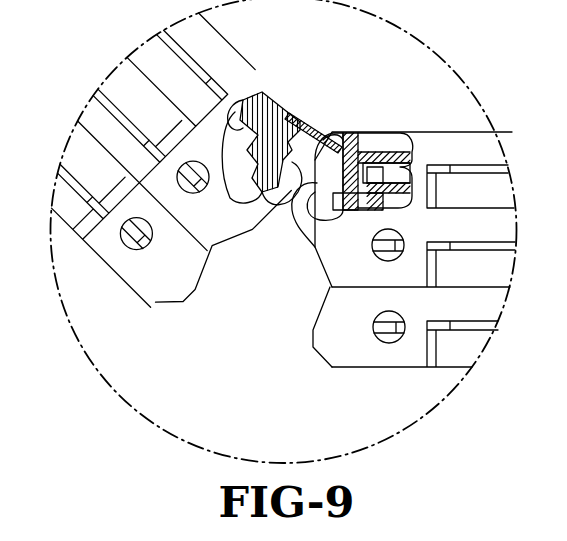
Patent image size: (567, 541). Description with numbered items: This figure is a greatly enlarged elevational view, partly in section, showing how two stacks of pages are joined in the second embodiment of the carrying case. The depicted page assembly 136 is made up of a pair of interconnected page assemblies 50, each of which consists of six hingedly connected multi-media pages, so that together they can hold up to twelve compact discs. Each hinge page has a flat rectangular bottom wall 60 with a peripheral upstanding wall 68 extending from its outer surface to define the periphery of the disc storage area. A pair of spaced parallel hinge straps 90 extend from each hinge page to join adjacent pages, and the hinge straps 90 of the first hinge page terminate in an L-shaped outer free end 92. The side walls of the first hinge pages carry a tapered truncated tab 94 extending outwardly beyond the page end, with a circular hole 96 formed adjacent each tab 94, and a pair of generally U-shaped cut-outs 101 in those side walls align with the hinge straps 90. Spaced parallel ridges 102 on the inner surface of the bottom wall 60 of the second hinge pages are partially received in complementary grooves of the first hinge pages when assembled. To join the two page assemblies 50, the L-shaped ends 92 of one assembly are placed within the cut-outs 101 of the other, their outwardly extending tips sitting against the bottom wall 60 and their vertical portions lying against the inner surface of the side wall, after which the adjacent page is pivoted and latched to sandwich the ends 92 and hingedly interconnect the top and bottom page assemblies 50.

The page assembly 50 is at (124, 318).
The bottom wall 60 is at (266, 100).
The peripheral upstanding wall 68 is at (345, 133).
The hinge straps 90 is at (320, 204).
The L-shaped outer free end 92 is at (302, 128).
The tapered truncated tab 94 is at (336, 135).
The circular hole 96 is at (388, 259).
The U-shaped cut-outs 101 is at (323, 140).
The ridges 102 is at (222, 105).
The page assembly 136 is at (273, 354).